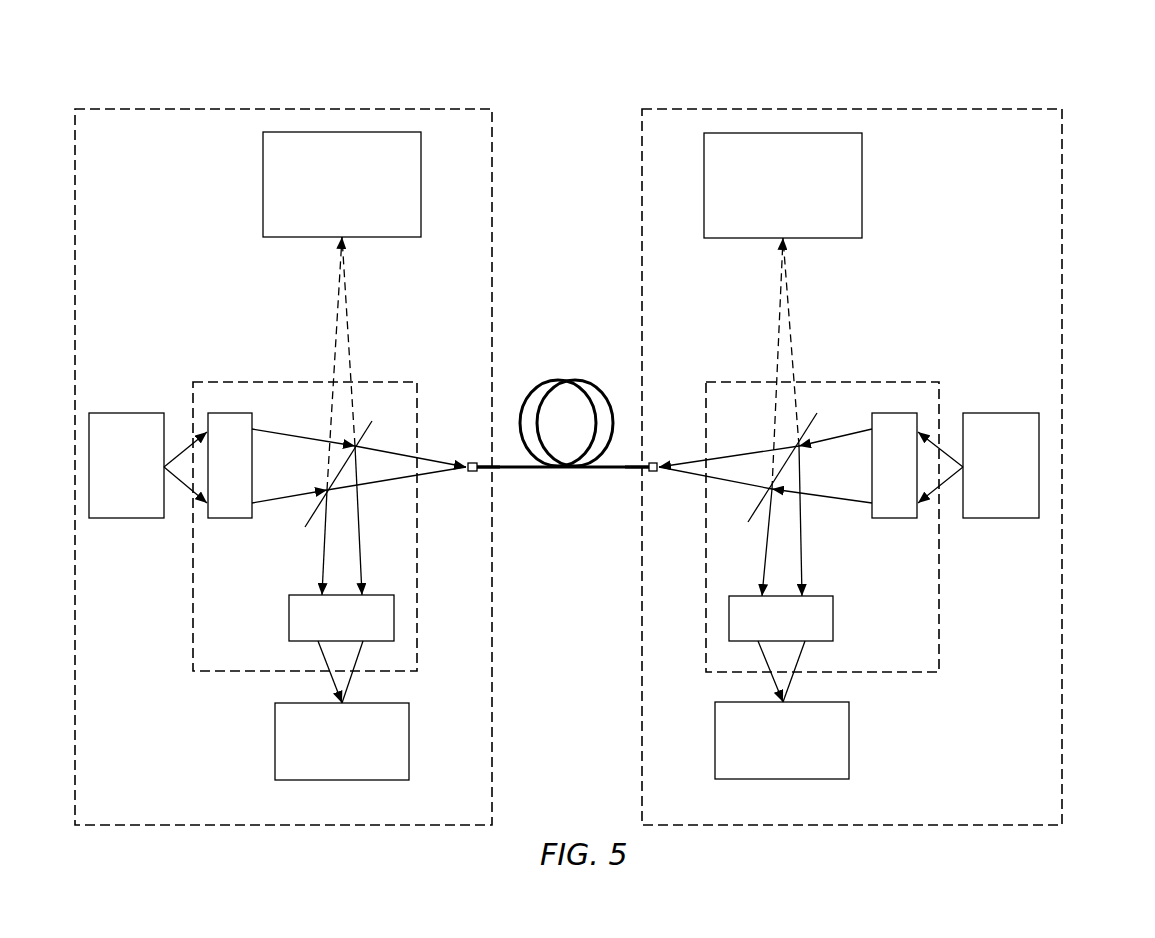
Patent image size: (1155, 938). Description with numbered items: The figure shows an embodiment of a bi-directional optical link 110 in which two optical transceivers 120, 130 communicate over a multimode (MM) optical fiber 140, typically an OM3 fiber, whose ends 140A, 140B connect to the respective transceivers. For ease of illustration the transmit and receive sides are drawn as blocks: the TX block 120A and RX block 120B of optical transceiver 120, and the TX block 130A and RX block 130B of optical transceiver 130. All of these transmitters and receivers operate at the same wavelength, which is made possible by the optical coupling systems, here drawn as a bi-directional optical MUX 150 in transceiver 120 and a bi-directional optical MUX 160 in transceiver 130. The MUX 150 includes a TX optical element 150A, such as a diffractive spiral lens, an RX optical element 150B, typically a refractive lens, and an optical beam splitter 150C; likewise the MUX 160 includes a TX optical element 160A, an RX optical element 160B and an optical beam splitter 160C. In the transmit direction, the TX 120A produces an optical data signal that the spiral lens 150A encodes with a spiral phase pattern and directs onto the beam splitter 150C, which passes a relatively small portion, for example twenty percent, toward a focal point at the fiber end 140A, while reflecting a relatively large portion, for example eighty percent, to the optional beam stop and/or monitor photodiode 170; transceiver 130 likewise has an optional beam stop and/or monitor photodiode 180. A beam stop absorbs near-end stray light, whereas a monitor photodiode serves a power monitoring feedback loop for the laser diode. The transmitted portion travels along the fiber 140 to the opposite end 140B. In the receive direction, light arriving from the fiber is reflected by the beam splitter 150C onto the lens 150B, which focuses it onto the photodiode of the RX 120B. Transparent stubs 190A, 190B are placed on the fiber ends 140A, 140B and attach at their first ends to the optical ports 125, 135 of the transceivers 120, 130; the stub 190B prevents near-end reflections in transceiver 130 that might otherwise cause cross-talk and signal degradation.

The bi-directional optical link 110 is at (1066, 71).
The optical transceiver 120 is at (385, 109).
The optical transceiver 130 is at (770, 109).
The MM optical fiber 140 is at (568, 359).
The end of MM optical fiber 140A is at (471, 472).
The end of MM optical fiber 140B is at (652, 472).
The beam stop and/or monitor photodiode 170 is at (263, 143).
The beam stop and/or monitor photodiode 180 is at (862, 140).
The TX block 120A is at (100, 413).
The RX block 120B is at (409, 703).
The TX block 130A is at (980, 413).
The RX block 130B is at (728, 700).
The bi-directional optical MUX 150 is at (388, 382).
The bi-directional optical MUX 160 is at (903, 382).
The TX optical element 150A is at (233, 413).
The RX optical element 150B is at (300, 595).
The optical beam splitter 150C is at (313, 516).
The TX optical element 160A is at (905, 413).
The RX optical element 160B is at (827, 596).
The optical beam splitter 160C is at (752, 510).
The transparent stub 190A is at (468, 462).
The transparent stub 190B is at (654, 462).
The optical port 125 is at (450, 475).
The optical port 135 is at (675, 457).